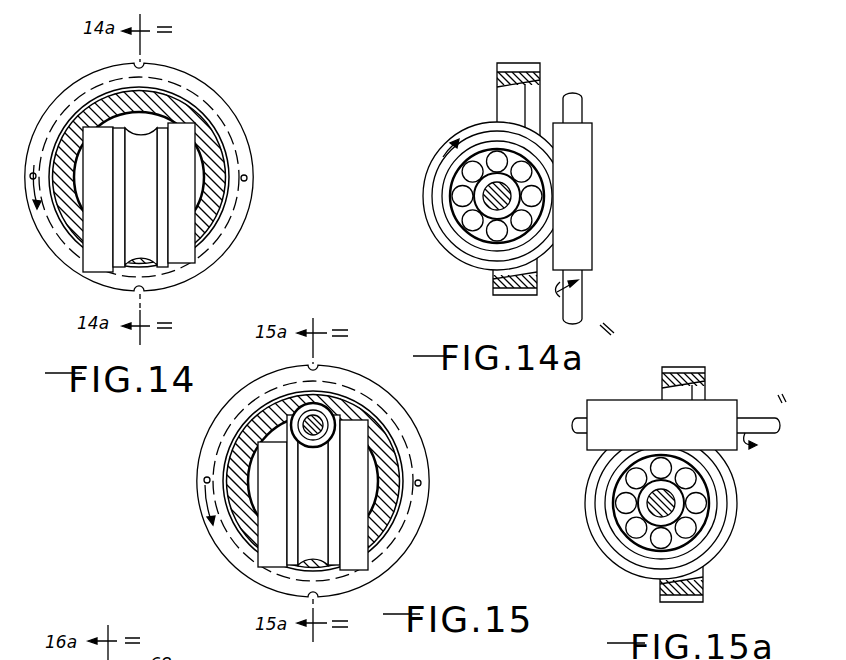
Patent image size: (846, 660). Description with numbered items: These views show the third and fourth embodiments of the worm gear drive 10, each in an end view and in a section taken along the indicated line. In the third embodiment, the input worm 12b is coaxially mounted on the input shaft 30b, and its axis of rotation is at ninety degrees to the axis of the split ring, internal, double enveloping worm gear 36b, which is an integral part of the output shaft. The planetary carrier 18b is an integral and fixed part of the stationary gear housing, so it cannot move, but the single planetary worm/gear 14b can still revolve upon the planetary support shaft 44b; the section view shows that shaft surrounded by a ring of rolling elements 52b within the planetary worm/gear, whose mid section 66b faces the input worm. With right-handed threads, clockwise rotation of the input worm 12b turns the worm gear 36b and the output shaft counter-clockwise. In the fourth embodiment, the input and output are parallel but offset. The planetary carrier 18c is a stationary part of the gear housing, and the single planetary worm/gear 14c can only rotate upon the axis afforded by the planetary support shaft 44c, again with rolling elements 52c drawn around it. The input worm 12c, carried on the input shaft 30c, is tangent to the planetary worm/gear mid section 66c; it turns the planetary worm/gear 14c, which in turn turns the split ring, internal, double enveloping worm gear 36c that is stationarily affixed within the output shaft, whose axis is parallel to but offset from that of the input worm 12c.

In FIG. 14, the housing 10 is at (256, 214).
In FIG. 14A, the housing 10 is at (490, 91).
In FIG. 15, the housing 10 is at (438, 480).
In FIG. 15A, the housing 10 is at (654, 589).
In FIG. 14A, the input worm 12b is at (584, 213).
In FIG. 15, the input worm 12c is at (334, 418).
In FIG. 15A, the input worm 12c is at (603, 436).
In FIG. 14, the planetary worm/gear 14b is at (165, 268).
In FIG. 14A, the planetary worm/gear 14b is at (432, 244).
In FIG. 15, the planetary worm/gear 14c is at (357, 549).
In FIG. 15A, the planetary worm/gear 14c is at (607, 558).
In FIG. 14, the planetary carrier 18b is at (213, 163).
In FIG. 15, the planetary carrier 18c is at (380, 505).
In FIG. 14A, the input shaft 30b is at (574, 112).
In FIG. 15, the shaft 30c is at (316, 420).
In FIG. 15A, the shaft 30c is at (582, 418).
In FIG. 14, the split ring, internal, double enveloping worm gear 36b is at (207, 99).
In FIG. 14A, the split ring, internal, double enveloping worm gear 36b is at (539, 75).
In FIG. 15, the split ring, internal, double enveloping worm gear 36c is at (392, 411).
In FIG. 15A, the split ring, internal, double enveloping worm gear 36c is at (707, 382).
In FIG. 14A, the planetary support shaft 44b is at (495, 204).
In FIG. 15A, the planetary support shaft 44c is at (664, 504).
In FIG. 14A, the ball bearings 52b is at (518, 172).
In FIG. 15A, the ball bearings 52c is at (688, 531).
In FIG. 14, the slot 66b is at (132, 266).
In FIG. 15, the planetary worm/gear mid section 66c is at (286, 569).